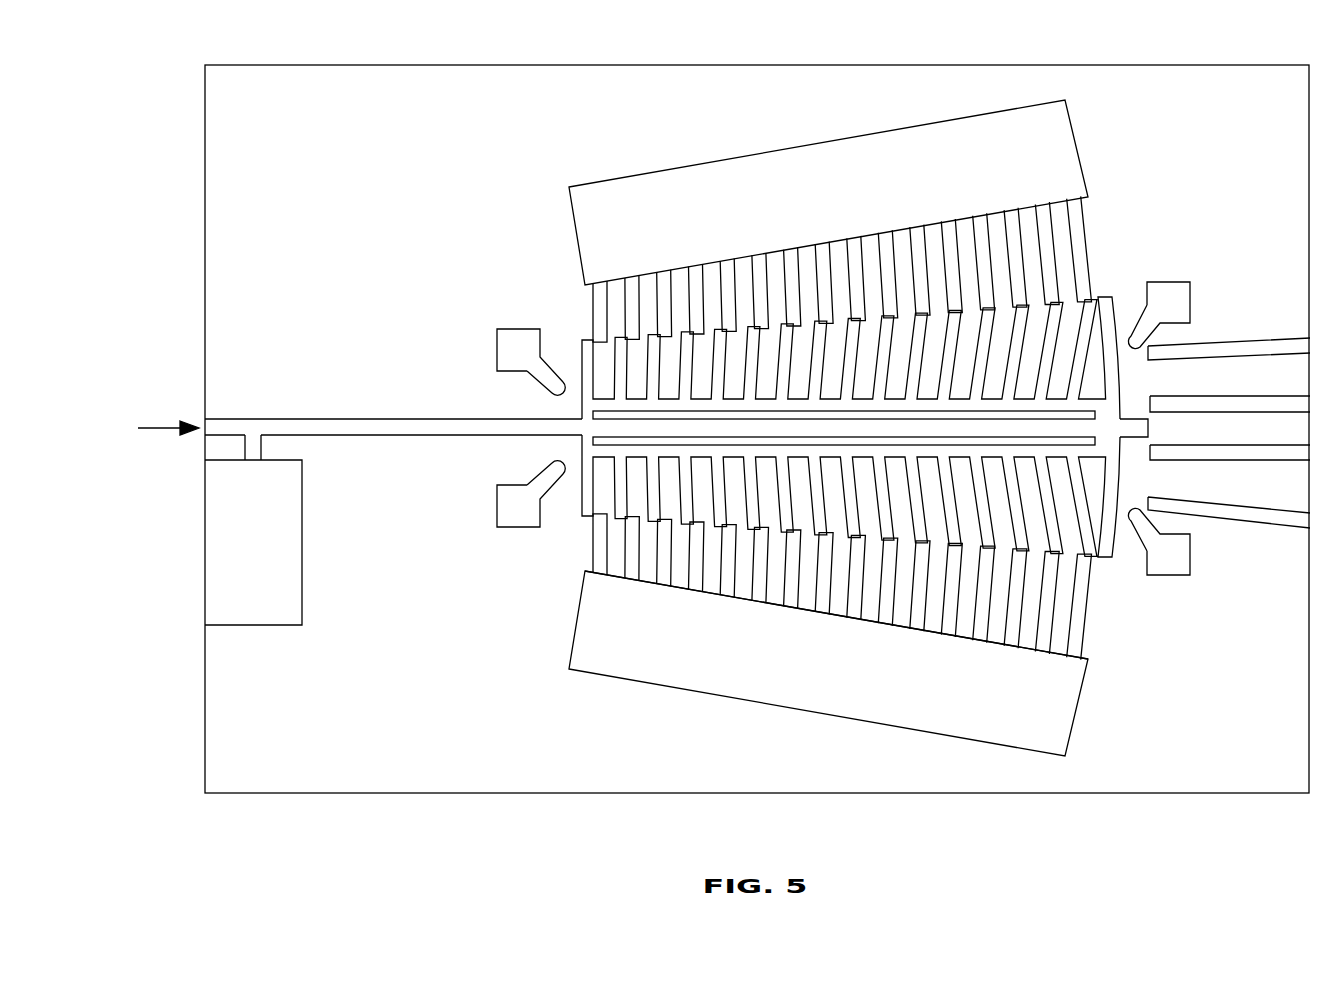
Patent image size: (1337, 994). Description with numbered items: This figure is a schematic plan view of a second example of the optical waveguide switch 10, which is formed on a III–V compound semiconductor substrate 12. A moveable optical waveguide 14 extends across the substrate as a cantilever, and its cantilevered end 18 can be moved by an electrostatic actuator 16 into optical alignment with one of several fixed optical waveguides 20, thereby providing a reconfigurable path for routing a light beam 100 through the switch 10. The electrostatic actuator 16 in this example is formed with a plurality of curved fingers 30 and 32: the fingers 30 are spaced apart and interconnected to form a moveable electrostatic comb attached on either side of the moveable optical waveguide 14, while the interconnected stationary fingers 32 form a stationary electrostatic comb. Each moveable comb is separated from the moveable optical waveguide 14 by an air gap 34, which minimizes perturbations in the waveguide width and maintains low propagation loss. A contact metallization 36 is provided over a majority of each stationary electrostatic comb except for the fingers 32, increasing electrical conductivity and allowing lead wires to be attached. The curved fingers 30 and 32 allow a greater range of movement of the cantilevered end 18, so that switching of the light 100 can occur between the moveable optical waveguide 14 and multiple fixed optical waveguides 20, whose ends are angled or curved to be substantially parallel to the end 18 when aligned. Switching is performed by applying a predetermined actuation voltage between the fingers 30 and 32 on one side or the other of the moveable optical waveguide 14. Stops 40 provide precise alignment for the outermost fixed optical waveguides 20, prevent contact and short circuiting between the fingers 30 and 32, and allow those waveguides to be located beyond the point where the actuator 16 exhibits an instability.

The optical waveguide switch 10 is at (1196, 803).
The III–V compound semiconductor substrate 12 is at (236, 751).
The moveable optical waveguide 14 is at (456, 437).
The electrostatic actuator 16 is at (810, 734).
The cantilevered end 18 is at (1149, 428).
The fixed optical waveguides 20 is at (1245, 338).
The fingers 30 is at (581, 516).
The stationary fingers 32 is at (588, 561).
The air gap 34 is at (590, 414).
The contact metallization 36 is at (592, 216).
The stops 40 is at (506, 361).
The light beam 100 is at (164, 424).